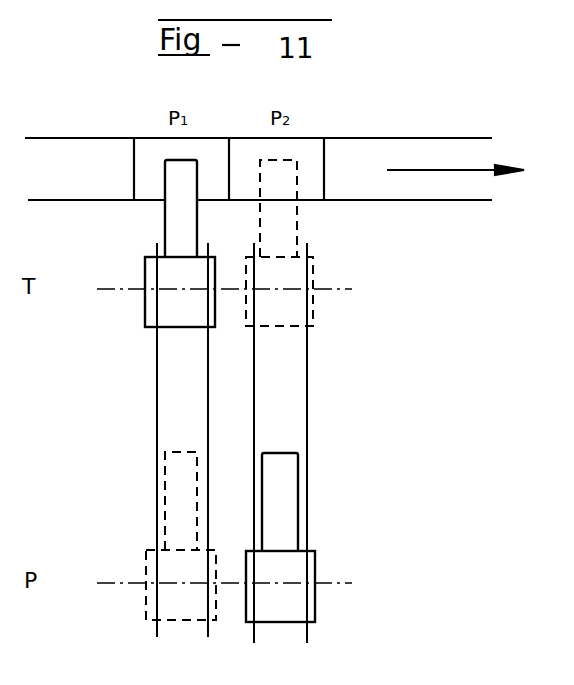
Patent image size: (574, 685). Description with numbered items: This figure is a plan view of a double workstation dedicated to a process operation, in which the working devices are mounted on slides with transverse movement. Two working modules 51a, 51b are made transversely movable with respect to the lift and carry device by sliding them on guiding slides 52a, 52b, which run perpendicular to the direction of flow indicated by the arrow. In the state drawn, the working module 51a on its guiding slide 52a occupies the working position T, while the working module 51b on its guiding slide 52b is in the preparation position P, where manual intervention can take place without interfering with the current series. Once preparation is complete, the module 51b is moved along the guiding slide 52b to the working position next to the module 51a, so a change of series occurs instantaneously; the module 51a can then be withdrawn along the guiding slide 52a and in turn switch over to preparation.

The working module 51a is at (158, 308).
The working module 51b is at (298, 570).
The guiding slide 52a is at (157, 405).
The guiding slide 52b is at (308, 383).